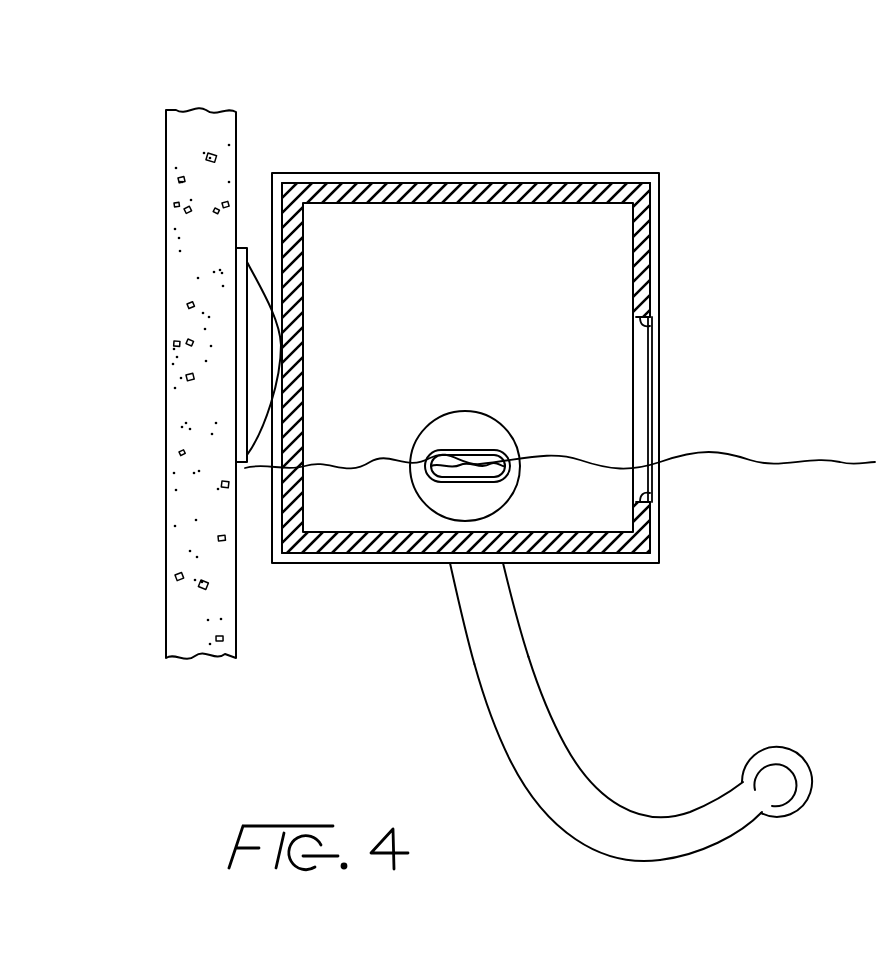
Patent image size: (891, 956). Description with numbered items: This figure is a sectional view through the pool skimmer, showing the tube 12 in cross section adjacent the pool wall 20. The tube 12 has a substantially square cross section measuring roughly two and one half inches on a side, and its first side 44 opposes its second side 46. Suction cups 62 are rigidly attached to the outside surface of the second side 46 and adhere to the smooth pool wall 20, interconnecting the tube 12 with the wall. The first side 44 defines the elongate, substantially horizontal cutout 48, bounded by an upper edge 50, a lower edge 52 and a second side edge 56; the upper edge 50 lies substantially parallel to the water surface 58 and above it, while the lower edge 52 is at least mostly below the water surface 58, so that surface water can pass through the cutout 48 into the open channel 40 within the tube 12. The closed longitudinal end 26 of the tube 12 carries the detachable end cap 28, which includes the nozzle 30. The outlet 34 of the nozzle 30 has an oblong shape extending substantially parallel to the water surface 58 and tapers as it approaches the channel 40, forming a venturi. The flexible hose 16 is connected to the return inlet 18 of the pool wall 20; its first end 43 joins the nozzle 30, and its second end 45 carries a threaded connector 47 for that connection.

The tube 12 is at (668, 198).
The hose 16 is at (645, 779).
The return inlet 18 is at (783, 750).
The pool wall 20 is at (180, 318).
The closed longitudinal end 26 is at (445, 332).
The end cap 28 is at (571, 178).
The nozzle 30 is at (491, 421).
The outlet 34 is at (485, 447).
The channel 40 is at (353, 506).
The first end 43 is at (490, 575).
The first side 44 is at (640, 265).
The second end 45 is at (760, 808).
The second side 46 is at (292, 232).
The threaded connector 47 is at (757, 757).
The cutout 48 is at (640, 420).
The upper edge 50 is at (646, 326).
The lower edge 52 is at (648, 494).
The second side edge 56 is at (640, 372).
The water surface 58 is at (832, 458).
The suction cups 62 is at (262, 342).